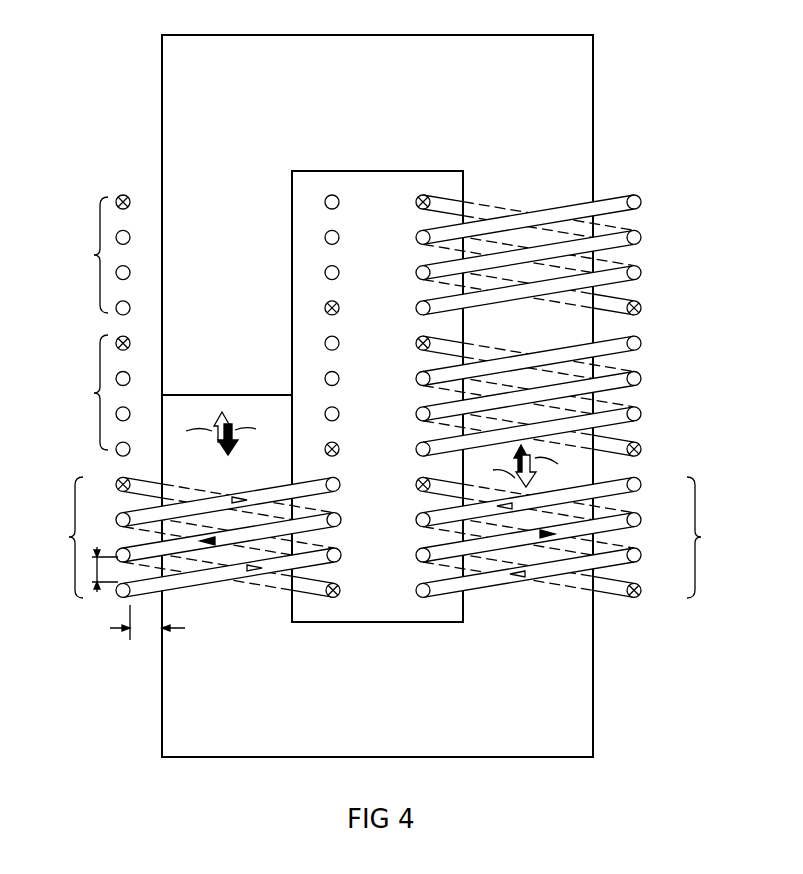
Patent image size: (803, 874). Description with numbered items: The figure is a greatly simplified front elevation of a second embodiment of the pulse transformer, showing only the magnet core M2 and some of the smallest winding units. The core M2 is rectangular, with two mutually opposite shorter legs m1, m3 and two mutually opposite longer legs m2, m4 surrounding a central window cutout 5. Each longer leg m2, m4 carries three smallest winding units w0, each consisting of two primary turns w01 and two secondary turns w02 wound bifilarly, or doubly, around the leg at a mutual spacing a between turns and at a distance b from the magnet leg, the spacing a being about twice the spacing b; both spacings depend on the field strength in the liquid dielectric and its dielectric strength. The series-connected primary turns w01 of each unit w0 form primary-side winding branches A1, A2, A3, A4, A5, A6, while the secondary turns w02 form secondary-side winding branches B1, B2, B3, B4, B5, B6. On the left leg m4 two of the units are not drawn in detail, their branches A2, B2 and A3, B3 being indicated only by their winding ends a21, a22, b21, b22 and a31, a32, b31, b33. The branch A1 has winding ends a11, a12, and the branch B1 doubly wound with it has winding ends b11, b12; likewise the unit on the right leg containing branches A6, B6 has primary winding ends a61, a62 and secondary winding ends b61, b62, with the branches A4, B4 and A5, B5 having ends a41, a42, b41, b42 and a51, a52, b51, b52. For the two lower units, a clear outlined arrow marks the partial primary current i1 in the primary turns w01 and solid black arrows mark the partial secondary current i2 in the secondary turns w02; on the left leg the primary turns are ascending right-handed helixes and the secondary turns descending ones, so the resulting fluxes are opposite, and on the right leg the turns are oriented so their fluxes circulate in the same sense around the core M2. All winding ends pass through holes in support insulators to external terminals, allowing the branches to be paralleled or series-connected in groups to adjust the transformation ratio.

The magnet core M2 is at (377, 380).
The central window cutout 5 is at (377, 396).
The shorter leg m1 is at (377, 118).
The longer leg m2 is at (504, 378).
The shorter leg m3 is at (377, 667).
The longer leg m4 is at (227, 265).
The winding branch on the primary side A1 is at (245, 546).
The winding branch on the secondary side B1 is at (315, 594).
The winding branch on the primary side A2 is at (227, 387).
The winding branch on the secondary side B2 is at (227, 396).
The winding branch on the primary side A3 is at (227, 255).
The winding branch on the secondary side B3 is at (227, 254).
The winding branch on the primary side A4 is at (528, 566).
The winding branch on the secondary side B4 is at (590, 598).
The winding branch on the primary side A5 is at (548, 396).
The winding branch on the secondary side B5 is at (641, 378).
The winding branch on the primary side A6 is at (548, 255).
The winding branch on the secondary side B6 is at (632, 240).
The winding end a11 is at (120, 597).
The winding end a12 is at (337, 478).
The winding end b11 is at (118, 478).
The winding end b12 is at (337, 582).
The winding end a21 is at (129, 452).
The winding end a22 is at (337, 347).
The winding end b21 is at (131, 325).
The winding end b22 is at (336, 443).
The winding end a31 is at (119, 290).
The winding end a32 is at (330, 196).
The winding end b31 is at (118, 197).
The winding end b33 is at (337, 313).
The winding end a41 is at (641, 485).
The winding end a42 is at (416, 590).
The winding end b41 is at (639, 585).
The winding end b42 is at (416, 484).
The winding end a51 is at (641, 343).
The winding end a52 is at (416, 448).
The winding end b51 is at (641, 449).
The winding end b52 is at (416, 343).
The winding end a61 is at (636, 195).
The winding end a62 is at (417, 307).
The winding end b61 is at (641, 308).
The winding end b62 is at (417, 197).
The partial primary current i1 is at (228, 497).
The partial secondary current i2 is at (207, 545).
The smallest winding unit w0 is at (387, 397).
The primary turn w01 is at (178, 582).
The secondary turn w02 is at (300, 588).
The minimum mutual spacing a is at (104, 569).
The minimum spacing from the core b is at (147, 622).